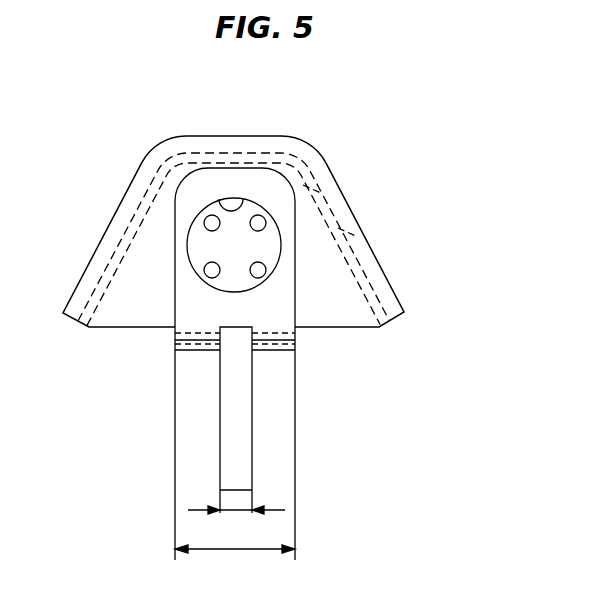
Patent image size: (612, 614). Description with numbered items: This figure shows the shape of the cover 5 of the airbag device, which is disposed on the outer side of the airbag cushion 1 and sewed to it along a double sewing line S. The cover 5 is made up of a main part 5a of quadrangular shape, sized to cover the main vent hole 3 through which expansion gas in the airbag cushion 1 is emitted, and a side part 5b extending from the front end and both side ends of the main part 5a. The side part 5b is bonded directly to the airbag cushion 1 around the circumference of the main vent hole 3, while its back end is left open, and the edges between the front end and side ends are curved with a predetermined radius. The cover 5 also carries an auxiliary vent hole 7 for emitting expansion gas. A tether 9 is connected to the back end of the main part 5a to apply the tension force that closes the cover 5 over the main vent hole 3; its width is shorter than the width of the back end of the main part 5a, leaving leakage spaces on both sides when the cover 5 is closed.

The airbag cushion 1 is at (93, 130).
The main vent hole 3 is at (217, 201).
The cover 5 is at (328, 151).
The main part 5a is at (282, 303).
The side part 5b is at (330, 285).
The auxiliary vent hole 7 is at (203, 270).
The tether 9 is at (245, 438).
The double sewing line S is at (307, 190).